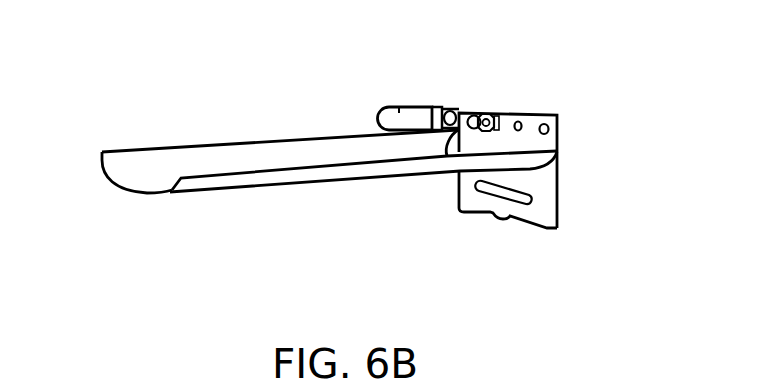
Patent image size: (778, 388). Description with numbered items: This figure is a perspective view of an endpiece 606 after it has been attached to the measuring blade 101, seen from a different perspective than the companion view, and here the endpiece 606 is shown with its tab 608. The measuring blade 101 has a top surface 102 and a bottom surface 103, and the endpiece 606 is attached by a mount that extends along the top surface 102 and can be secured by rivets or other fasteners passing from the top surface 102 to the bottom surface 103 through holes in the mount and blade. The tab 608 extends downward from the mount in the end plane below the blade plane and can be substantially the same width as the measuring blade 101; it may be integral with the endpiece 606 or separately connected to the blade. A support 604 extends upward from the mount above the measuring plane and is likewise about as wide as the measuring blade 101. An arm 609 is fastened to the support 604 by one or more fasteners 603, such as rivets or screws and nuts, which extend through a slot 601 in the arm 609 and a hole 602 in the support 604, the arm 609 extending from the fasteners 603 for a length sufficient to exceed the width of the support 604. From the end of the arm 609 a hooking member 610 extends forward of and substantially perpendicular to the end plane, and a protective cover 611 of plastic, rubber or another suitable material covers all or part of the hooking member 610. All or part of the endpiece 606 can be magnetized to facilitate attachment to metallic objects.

The measuring blade 101 is at (110, 180).
The top surface 102 is at (168, 157).
The bottom surface 103 is at (252, 192).
The slot 601 is at (448, 108).
The hole 602 is at (552, 118).
The fasteners 603 is at (500, 110).
The support 604 is at (552, 140).
The endpiece 606 is at (577, 155).
The tab 608 is at (547, 200).
The arm 609 is at (443, 107).
The hooking member 610 is at (434, 107).
The protective cover 611 is at (400, 108).